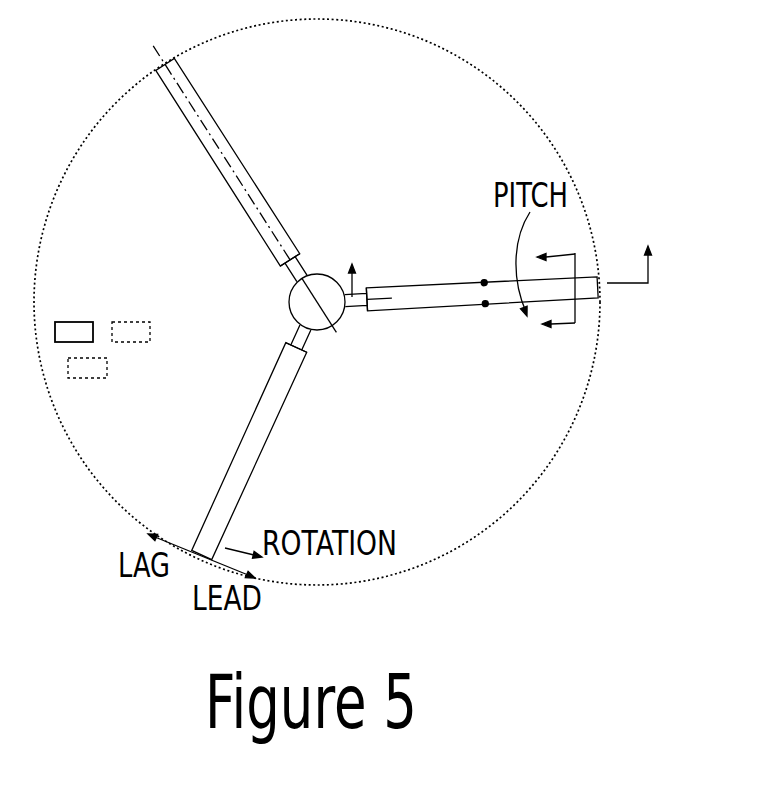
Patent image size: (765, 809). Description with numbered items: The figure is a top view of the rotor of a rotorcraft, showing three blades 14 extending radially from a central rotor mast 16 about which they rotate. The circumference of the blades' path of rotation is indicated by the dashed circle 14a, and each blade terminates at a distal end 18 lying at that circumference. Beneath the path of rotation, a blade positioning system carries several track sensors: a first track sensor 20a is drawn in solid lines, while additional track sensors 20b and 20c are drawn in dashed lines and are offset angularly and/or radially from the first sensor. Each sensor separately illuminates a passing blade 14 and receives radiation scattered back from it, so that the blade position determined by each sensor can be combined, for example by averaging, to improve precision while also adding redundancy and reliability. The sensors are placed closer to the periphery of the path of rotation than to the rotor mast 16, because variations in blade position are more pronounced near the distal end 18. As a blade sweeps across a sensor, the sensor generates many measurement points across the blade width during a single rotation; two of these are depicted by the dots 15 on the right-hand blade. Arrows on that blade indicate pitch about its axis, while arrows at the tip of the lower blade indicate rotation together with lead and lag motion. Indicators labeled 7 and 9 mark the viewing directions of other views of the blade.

The section line of FIG. 7 is at (556, 294).
The view direction of FIG. 9 is at (500, 254).
The blade 14 is at (233, 161).
The path of rotation 14a is at (184, 73).
The dots 15 is at (485, 284).
The rotor mast 16 is at (317, 302).
The distal end 18 is at (202, 560).
The first track sensor 20a is at (73, 330).
The additional track sensor 20b is at (127, 325).
The additional track sensor 20c is at (84, 378).